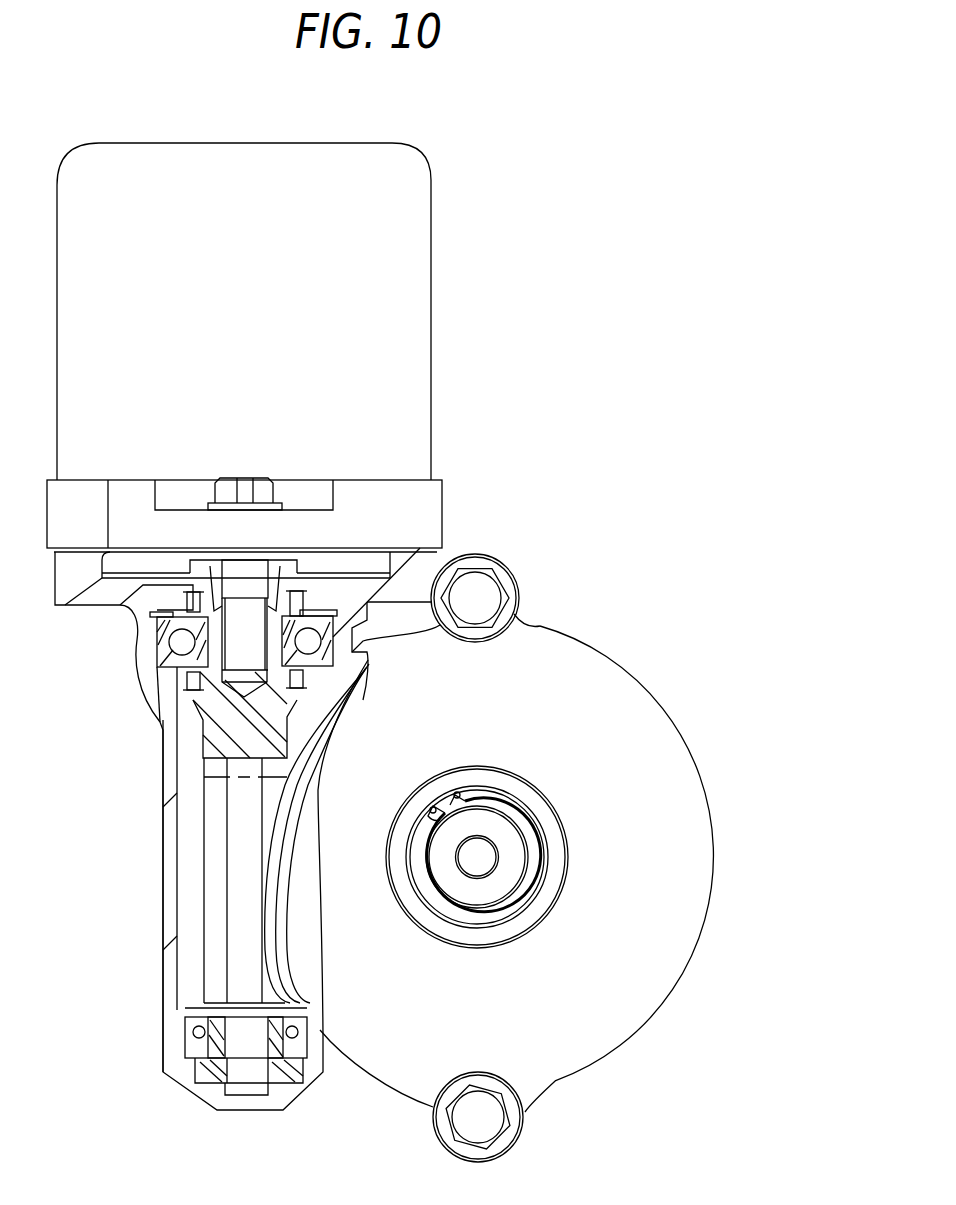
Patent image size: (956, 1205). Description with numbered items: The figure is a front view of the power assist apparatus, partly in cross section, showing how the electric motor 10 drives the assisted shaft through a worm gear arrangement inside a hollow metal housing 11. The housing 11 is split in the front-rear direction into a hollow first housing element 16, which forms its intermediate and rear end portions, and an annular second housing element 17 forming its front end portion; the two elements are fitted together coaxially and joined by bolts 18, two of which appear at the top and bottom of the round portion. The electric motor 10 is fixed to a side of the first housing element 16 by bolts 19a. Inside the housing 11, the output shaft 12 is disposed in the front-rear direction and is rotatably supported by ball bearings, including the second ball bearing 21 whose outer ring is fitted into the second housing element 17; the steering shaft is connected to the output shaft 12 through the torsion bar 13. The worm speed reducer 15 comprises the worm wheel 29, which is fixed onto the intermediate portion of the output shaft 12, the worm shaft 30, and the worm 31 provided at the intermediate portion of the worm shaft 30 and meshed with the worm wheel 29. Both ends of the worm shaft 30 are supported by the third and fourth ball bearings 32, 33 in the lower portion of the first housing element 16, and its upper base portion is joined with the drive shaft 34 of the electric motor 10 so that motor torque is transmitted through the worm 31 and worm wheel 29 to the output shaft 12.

The electric motor 10 is at (377, 230).
The housing 11 is at (657, 843).
The output shaft 12 is at (483, 826).
The torsion bar 13 is at (482, 857).
The worm speed reducer 15 is at (200, 862).
The first housing element 16 is at (172, 904).
The second housing element 17 is at (617, 967).
The bolts 18 is at (460, 602).
The bolts 19a is at (260, 490).
The second ball bearing 21 is at (545, 805).
The worm wheel 29 is at (312, 958).
The worm shaft 30 is at (242, 732).
The worm 31 is at (224, 822).
The third ball bearing 32 is at (182, 642).
The fourth ball bearing 33 is at (185, 1030).
The drive shaft 34 is at (242, 638).